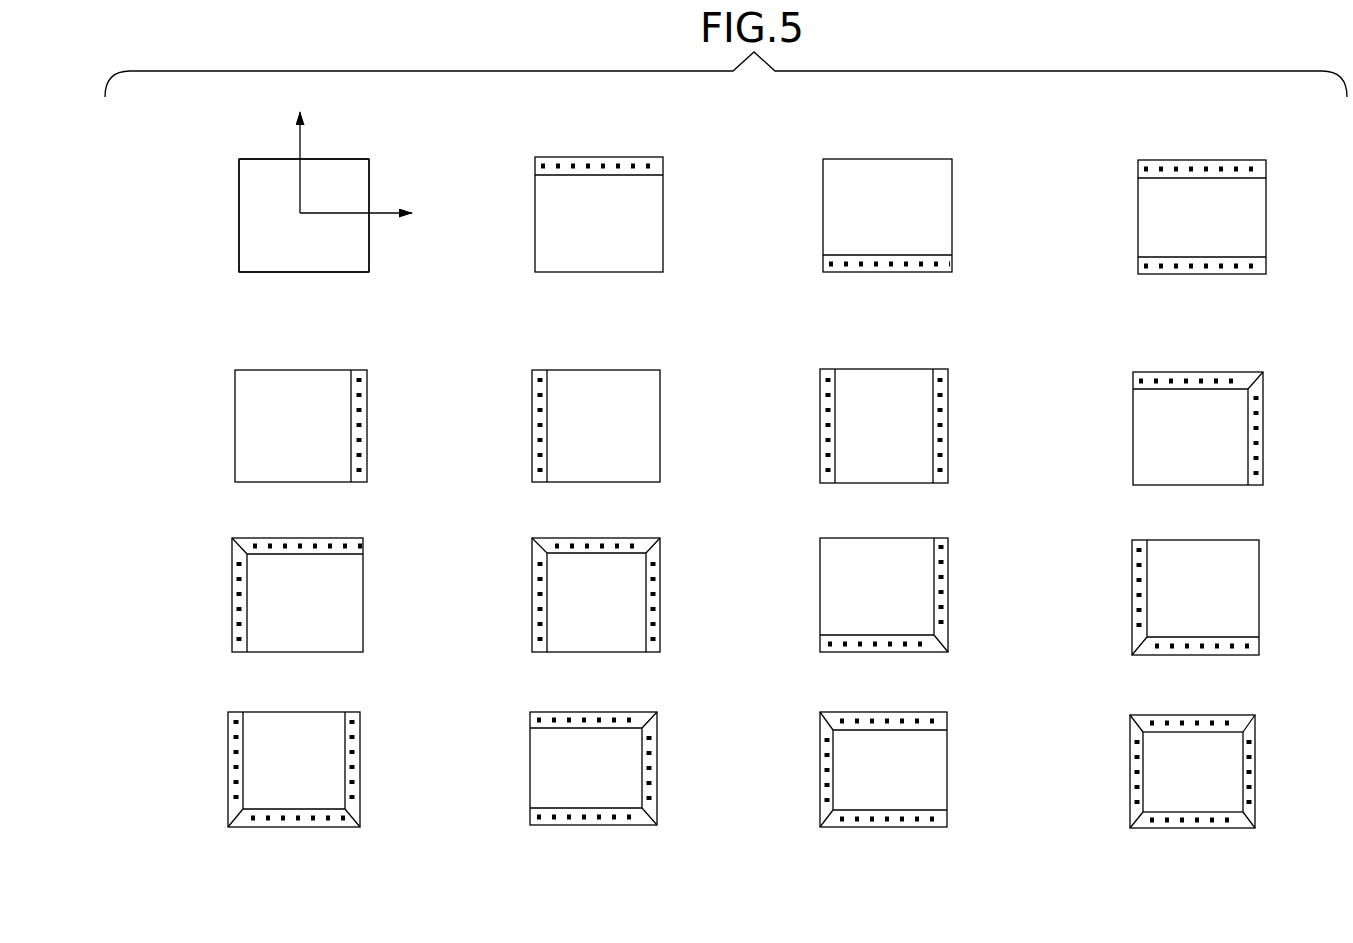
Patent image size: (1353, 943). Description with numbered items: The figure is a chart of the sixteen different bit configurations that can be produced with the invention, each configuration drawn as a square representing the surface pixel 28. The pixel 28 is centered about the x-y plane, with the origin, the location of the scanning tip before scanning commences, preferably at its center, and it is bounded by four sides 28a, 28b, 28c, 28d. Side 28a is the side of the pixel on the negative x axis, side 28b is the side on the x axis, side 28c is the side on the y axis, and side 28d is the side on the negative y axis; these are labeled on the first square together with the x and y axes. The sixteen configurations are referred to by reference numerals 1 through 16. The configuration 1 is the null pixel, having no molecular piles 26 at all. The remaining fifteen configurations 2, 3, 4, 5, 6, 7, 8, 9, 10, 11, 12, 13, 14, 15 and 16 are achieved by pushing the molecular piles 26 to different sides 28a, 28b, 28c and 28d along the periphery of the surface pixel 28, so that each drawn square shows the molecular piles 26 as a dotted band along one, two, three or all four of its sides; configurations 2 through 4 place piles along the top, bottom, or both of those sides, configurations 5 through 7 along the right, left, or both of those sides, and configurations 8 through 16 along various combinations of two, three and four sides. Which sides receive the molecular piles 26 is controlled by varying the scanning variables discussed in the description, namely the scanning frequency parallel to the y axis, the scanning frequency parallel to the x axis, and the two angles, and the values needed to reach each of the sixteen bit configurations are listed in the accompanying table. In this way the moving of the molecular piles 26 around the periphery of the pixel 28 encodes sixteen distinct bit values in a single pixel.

The null pixel bit configuration 1 is at (213, 196).
The bit configuration 2 is at (676, 173).
The bit configuration 3 is at (975, 176).
The bit configuration 4 is at (1275, 242).
The bit configuration 5 is at (376, 442).
The bit configuration 6 is at (630, 356).
The bit configuration 7 is at (958, 370).
The bit configuration 8 is at (1158, 363).
The bit configuration 9 is at (372, 613).
The bit configuration 10 is at (670, 620).
The bit configuration 11 is at (963, 548).
The bit configuration 12 is at (1270, 553).
The bit configuration 13 is at (372, 797).
The bit configuration 14 is at (675, 800).
The bit configuration 15 is at (962, 793).
The bit configuration 16 is at (1245, 843).
The molecular piles 26 is at (625, 157).
The pixel 28 is at (272, 193).
The side 28a is at (238, 234).
The side 28b is at (369, 183).
The side 28c is at (333, 158).
The side 28d is at (310, 273).